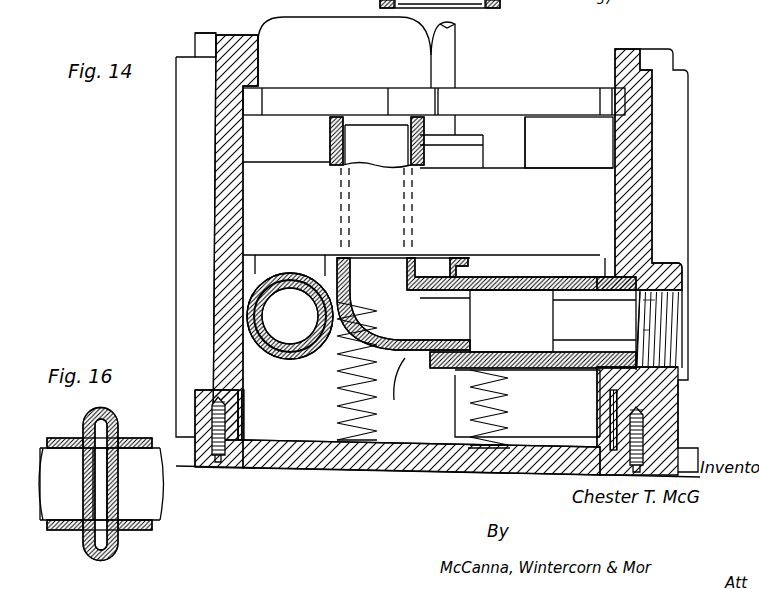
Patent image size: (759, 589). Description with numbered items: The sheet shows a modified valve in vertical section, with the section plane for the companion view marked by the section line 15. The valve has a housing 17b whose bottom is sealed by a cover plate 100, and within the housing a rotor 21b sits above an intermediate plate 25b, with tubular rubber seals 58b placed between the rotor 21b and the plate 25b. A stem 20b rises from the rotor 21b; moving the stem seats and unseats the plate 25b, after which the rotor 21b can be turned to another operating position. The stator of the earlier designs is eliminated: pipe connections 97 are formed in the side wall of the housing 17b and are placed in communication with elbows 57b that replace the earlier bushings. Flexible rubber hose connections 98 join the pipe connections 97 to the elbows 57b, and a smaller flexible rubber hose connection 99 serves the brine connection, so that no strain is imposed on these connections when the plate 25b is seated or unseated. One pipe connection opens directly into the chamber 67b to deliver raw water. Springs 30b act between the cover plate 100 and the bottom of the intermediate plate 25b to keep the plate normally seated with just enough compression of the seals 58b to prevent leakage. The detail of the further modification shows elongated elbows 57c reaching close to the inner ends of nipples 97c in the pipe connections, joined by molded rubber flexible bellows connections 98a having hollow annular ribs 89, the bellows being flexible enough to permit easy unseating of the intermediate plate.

In FIG. 14, the stem 20b is at (445, 57).
In FIG. 14, the rotor 21b is at (507, 100).
In FIG. 14, the intermediate plate 25b is at (532, 182).
In FIG. 14, the tubular rubber seals 58b is at (330, 152).
In FIG. 14, the housing 17b is at (650, 212).
In FIG. 14, the pipe connections 97 is at (667, 307).
In FIG. 14, the flexible rubber hose connections 98 is at (522, 292).
In FIG. 14, the chamber 67b is at (262, 386).
In FIG. 14, the elbows 57b is at (371, 397).
In FIG. 14, the springs 30b is at (510, 398).
In FIG. 14, the cover plate 100 is at (312, 471).
In FIG. 14, the smaller flexible rubber hose connection 99 is at (536, 430).
In FIG. 14, the section line 15- 15 is at (148, 262).
In FIG. 16, the hollow annular ribs 89 is at (110, 412).
In FIG. 16, the molded rubber flexible bellows connections 98a is at (133, 528).
In FIG. 16, the nipples 97c is at (101, 484).
In FIG. 16, the elbows 57c is at (60, 507).